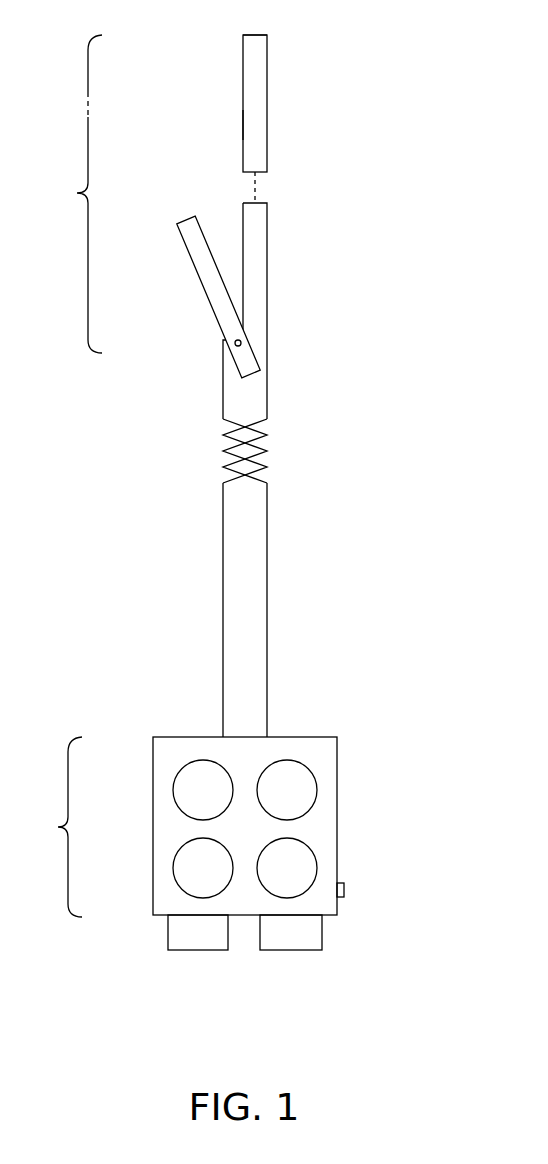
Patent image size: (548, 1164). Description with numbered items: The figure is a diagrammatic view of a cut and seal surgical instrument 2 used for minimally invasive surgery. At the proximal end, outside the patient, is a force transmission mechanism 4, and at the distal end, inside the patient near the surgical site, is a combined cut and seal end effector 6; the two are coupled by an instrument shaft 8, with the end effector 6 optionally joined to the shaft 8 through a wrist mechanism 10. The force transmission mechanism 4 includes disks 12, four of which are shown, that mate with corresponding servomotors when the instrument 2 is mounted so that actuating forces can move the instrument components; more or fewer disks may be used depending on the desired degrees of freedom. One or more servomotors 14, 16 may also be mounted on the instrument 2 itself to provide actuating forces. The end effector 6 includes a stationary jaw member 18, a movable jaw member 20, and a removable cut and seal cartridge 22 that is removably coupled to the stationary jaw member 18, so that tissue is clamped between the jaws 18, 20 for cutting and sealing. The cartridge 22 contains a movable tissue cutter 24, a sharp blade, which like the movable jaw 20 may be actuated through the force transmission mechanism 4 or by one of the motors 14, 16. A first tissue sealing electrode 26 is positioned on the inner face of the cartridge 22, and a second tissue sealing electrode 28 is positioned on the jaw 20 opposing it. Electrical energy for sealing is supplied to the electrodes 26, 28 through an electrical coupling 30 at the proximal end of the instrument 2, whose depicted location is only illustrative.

The cut and seal surgical instrument 2 is at (428, 403).
The force transmission mechanism 4 is at (186, 827).
The cut and seal end effector 6 is at (78, 194).
The instrument shaft 8 is at (238, 585).
The wrist mechanism 10 is at (210, 447).
The disks 12 is at (308, 795).
The servomotor 14 is at (193, 950).
The servomotor 16 is at (285, 950).
The stationary jaw member 18 is at (263, 245).
The movable jaw member 20 is at (215, 283).
The removable cut and seal cartridge 22 is at (262, 84).
The movable tissue cutter 24 is at (243, 48).
The first tissue sealing electrode 26 is at (243, 127).
The second tissue sealing electrode 28 is at (199, 222).
The electrical coupling 30 is at (345, 889).